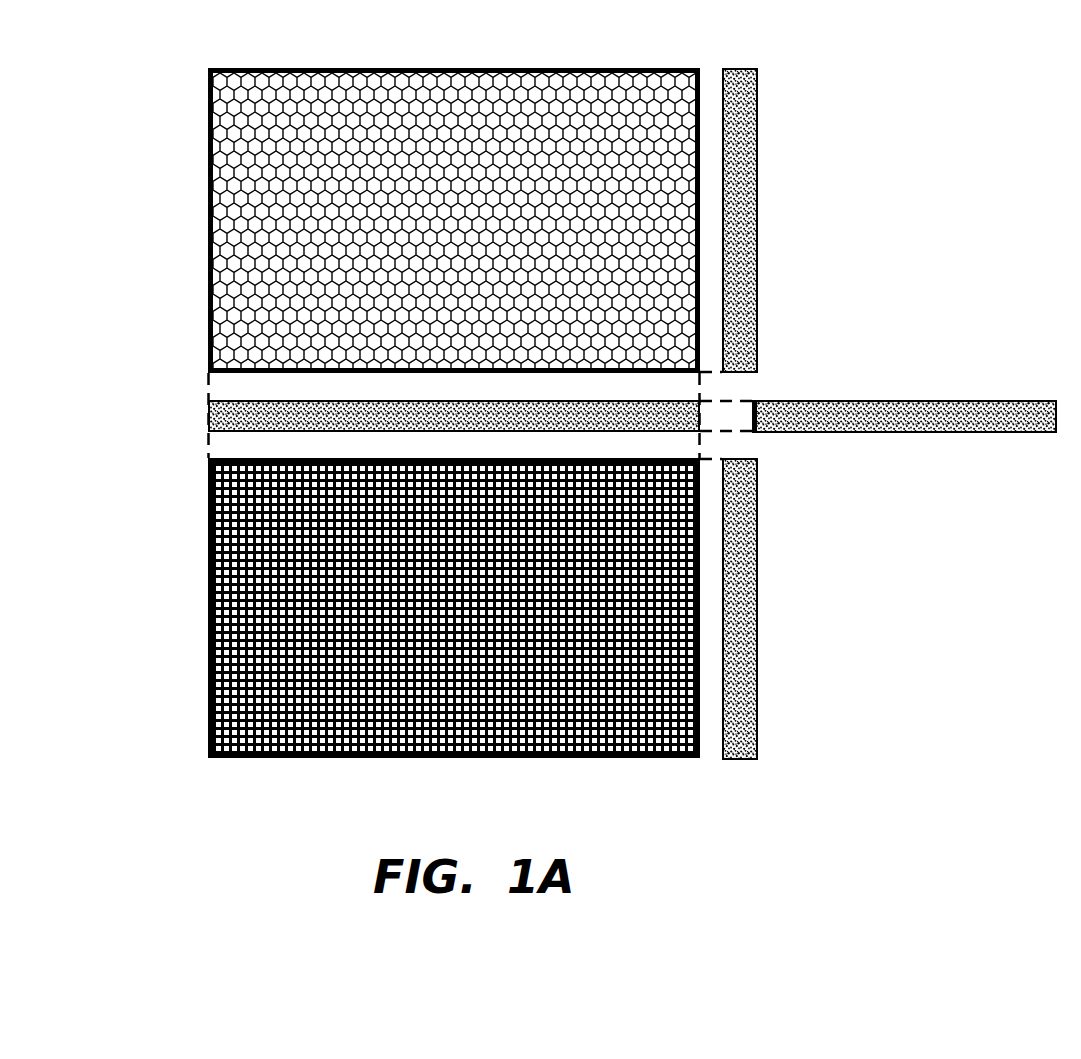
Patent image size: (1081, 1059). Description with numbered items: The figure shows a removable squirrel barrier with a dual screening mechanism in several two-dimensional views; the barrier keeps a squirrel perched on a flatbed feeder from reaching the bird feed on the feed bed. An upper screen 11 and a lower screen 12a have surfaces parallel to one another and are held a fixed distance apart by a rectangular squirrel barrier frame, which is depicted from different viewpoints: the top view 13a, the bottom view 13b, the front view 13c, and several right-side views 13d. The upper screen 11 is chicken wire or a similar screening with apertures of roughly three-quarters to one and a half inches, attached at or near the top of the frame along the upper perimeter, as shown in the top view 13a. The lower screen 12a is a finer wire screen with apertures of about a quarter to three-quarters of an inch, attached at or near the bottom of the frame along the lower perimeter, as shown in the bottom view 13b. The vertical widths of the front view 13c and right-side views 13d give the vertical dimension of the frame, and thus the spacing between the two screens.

The upper screen 11 is at (232, 240).
The lower screen 12a is at (208, 612).
The top view of squirrel barrier frame 13a is at (319, 68).
The bottom view of squirrel barrier frame 13b is at (316, 758).
The front view of squirrel barrier frame 13c is at (212, 412).
The right-side views of squirrel barrier frame 13d is at (848, 408).